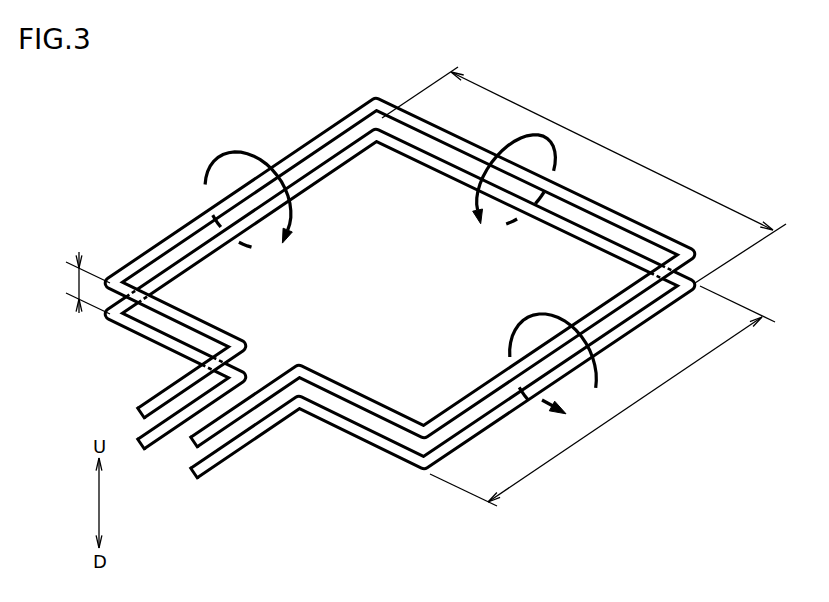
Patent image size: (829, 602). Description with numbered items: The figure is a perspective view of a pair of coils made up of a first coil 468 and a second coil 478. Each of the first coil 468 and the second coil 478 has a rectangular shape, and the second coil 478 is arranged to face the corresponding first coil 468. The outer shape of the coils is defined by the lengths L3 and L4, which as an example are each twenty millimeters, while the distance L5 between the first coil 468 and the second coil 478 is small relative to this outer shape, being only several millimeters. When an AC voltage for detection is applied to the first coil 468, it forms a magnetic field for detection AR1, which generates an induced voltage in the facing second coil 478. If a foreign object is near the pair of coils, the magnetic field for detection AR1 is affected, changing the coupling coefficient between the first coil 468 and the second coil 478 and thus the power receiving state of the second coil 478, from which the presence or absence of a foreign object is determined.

The first coil 468 is at (360, 433).
The second coil 478 is at (365, 402).
The magnetic field for detection AR1 is at (252, 157).
The length L3 is at (618, 412).
The length L4 is at (613, 150).
The distance L5 is at (77, 282).